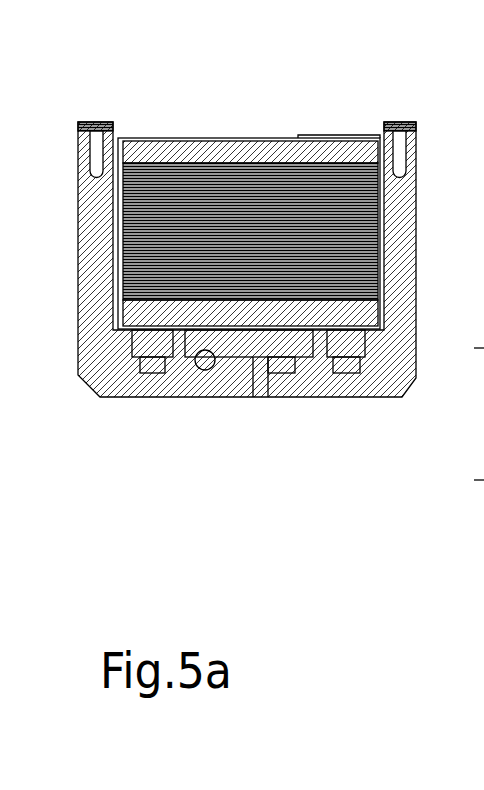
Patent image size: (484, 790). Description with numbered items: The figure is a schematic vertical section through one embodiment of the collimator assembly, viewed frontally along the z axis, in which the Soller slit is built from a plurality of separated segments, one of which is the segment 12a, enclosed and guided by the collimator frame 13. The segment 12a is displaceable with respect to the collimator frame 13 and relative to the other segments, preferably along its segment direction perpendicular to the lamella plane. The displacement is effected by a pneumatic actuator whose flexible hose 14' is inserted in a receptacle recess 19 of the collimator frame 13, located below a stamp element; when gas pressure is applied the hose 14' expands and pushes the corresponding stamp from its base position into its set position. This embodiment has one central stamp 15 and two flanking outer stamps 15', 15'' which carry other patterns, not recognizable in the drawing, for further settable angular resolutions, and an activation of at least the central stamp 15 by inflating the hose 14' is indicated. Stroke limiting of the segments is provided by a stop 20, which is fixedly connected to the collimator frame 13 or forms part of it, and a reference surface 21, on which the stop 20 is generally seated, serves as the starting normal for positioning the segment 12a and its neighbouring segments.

The segment 12a is at (261, 162).
The collimator frame 13 is at (411, 215).
The hose 14' is at (249, 406).
The central stamp 15 is at (278, 409).
The outer stamp 15' is at (133, 406).
The outer stamp 15'' is at (349, 406).
The receptacle recess 19 is at (199, 374).
The stop 20 is at (469, 482).
The reference surface 21 is at (469, 350).